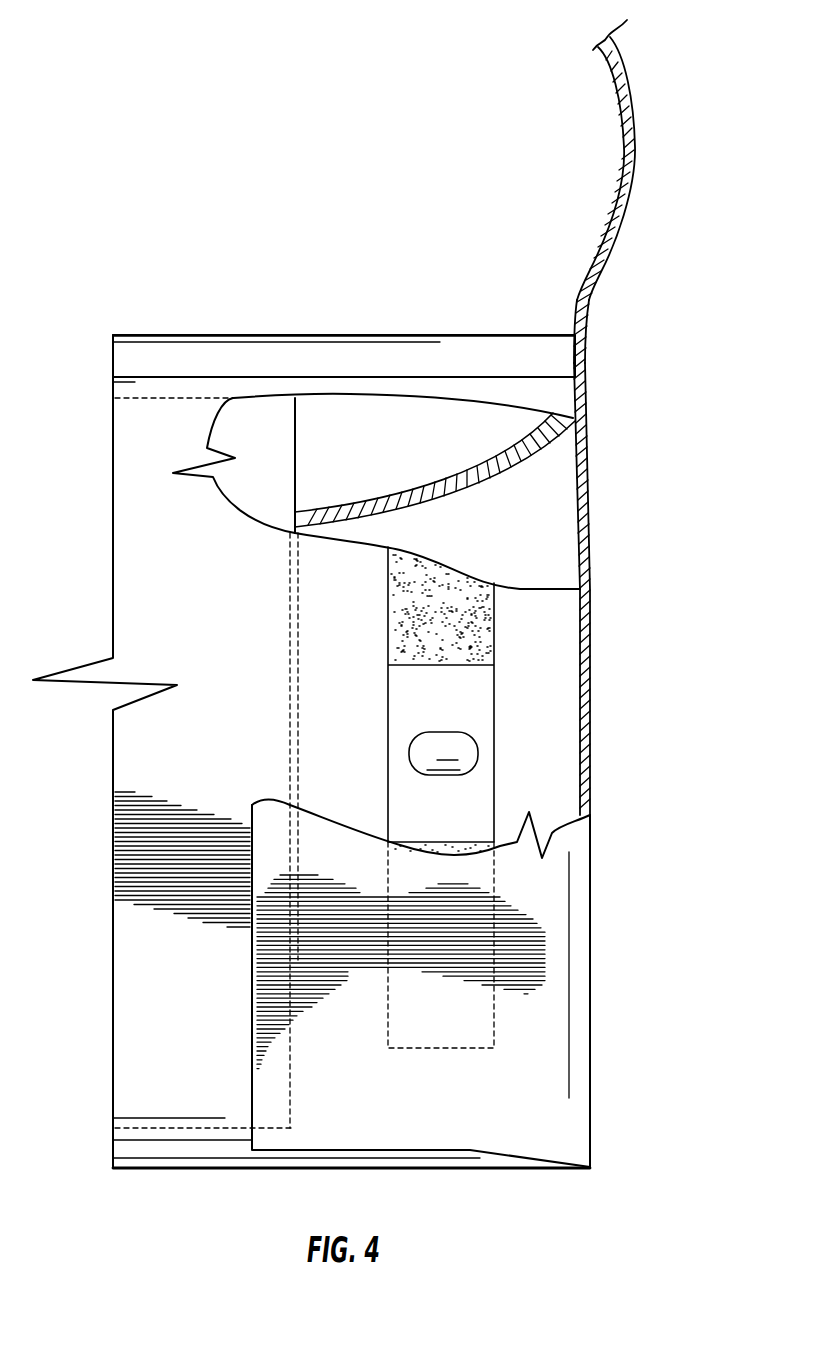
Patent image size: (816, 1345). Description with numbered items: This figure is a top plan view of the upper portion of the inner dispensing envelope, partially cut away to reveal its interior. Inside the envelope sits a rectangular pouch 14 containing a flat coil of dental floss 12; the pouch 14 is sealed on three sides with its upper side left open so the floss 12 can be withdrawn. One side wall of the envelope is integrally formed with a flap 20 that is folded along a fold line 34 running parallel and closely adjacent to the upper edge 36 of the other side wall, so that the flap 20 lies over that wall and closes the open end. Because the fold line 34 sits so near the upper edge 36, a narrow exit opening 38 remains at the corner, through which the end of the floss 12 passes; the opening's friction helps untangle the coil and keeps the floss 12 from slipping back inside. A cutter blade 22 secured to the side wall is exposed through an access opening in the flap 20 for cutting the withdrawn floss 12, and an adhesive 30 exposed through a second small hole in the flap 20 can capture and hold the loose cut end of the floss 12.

The dental floss 12 is at (630, 150).
The pouch 14 is at (295, 447).
The flap 20 is at (522, 1128).
The cutter blade 22 is at (463, 753).
The adhesive 30 is at (472, 645).
The fold line 34 is at (587, 350).
The upper edge 36 is at (573, 360).
The exit opening 38 is at (585, 338).